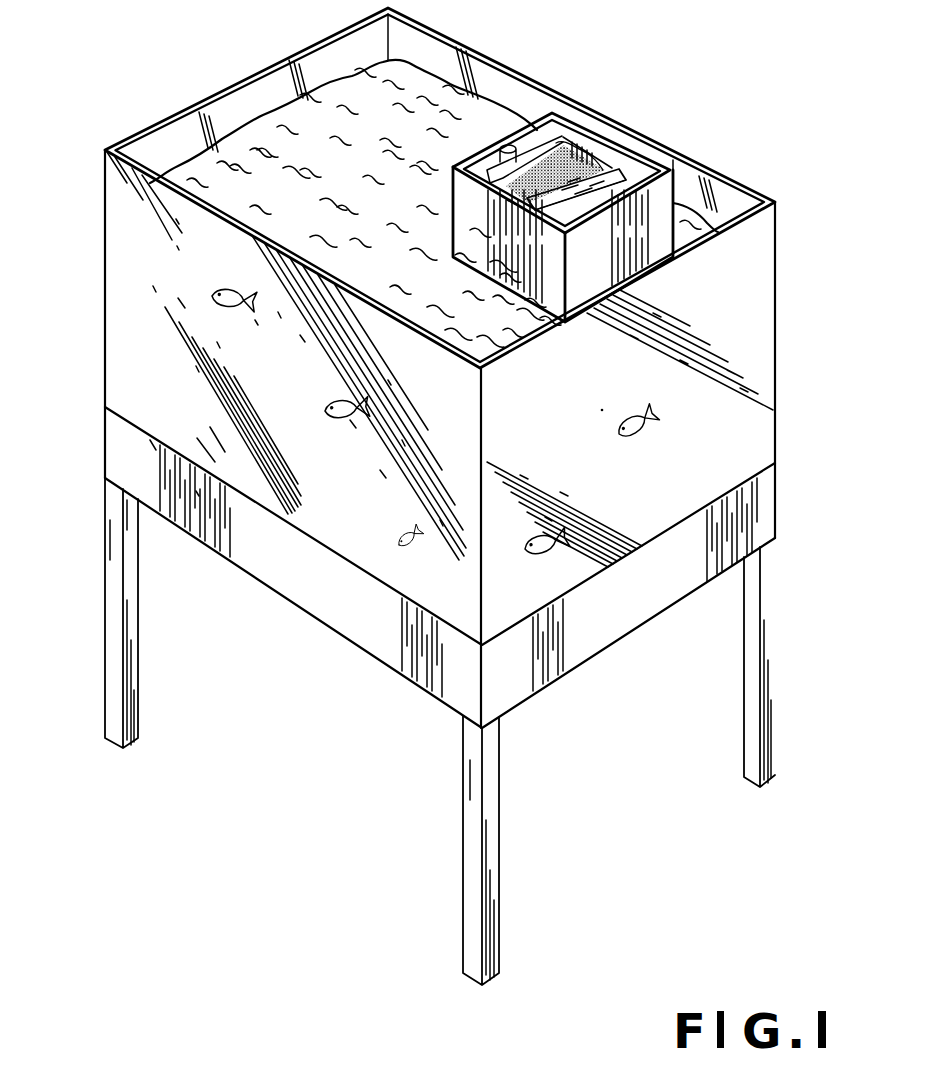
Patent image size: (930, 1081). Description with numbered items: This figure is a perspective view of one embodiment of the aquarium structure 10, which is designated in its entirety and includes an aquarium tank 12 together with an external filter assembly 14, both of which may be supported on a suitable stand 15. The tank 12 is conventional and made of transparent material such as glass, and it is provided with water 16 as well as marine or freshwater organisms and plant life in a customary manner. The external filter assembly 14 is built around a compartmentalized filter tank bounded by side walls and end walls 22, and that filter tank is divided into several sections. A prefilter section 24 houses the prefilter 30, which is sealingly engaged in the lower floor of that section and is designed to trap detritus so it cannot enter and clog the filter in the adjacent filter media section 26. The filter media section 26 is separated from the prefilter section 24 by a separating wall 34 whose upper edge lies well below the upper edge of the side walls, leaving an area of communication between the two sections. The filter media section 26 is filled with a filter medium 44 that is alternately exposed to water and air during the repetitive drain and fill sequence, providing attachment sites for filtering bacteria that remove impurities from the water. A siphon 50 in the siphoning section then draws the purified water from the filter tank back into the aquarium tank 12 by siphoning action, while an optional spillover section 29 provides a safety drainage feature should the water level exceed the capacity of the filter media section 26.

The aquarium structure 10 is at (139, 112).
The aquarium tank 12 is at (103, 300).
The external filter assembly 14 is at (675, 192).
The stand 15 is at (105, 438).
The water 16 is at (292, 115).
The end walls 22 is at (452, 197).
The prefilter section 24 is at (542, 136).
The filter media section 26 is at (592, 147).
The spillover section 29 is at (617, 189).
The prefilter 30 is at (506, 141).
The separating wall 34 is at (568, 138).
The filter medium 44 is at (510, 204).
The siphon 50 is at (600, 165).